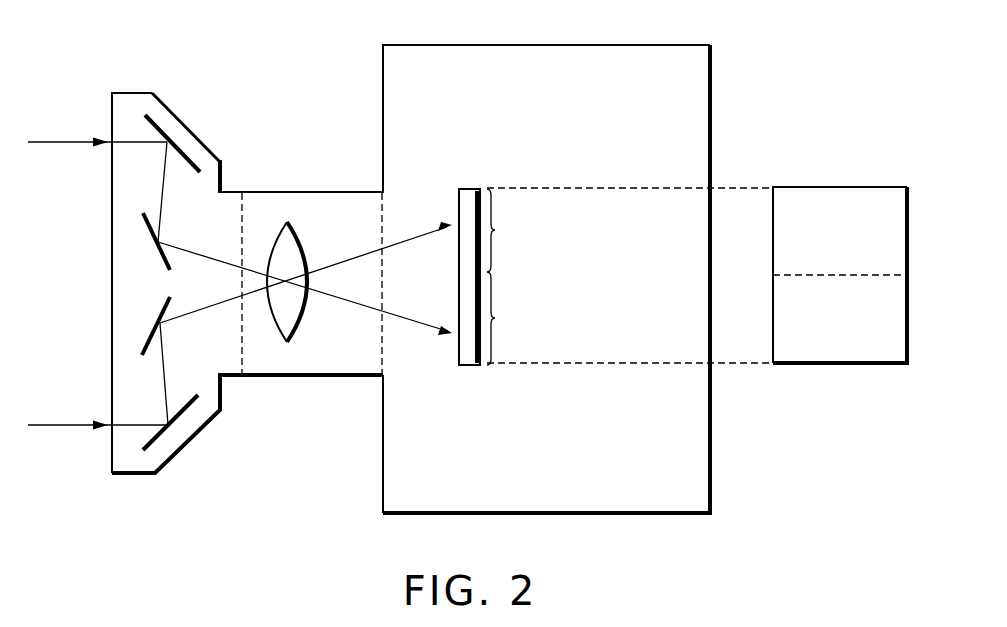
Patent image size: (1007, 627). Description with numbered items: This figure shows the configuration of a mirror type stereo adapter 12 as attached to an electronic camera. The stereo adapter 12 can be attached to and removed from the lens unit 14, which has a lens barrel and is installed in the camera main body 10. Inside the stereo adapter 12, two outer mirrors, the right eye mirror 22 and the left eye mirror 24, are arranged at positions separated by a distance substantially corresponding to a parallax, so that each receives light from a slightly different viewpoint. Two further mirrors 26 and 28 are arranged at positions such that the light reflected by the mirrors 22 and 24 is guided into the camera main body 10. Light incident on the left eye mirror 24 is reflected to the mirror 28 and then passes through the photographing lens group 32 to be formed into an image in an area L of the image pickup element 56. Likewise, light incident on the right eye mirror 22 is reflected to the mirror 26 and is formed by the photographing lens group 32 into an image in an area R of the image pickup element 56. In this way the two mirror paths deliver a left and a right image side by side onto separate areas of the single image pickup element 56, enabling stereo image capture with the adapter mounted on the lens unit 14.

The camera main body 10 is at (366, 71).
The mirror type stereo adapter 12 is at (170, 93).
The lens unit 14 is at (302, 186).
The right eye mirror 22 is at (147, 125).
The left eye mirror 24 is at (150, 440).
The mirror 26 is at (150, 237).
The mirror 28 is at (148, 345).
The photographing lens group 32 is at (302, 247).
The image pickup element 56 is at (468, 188).